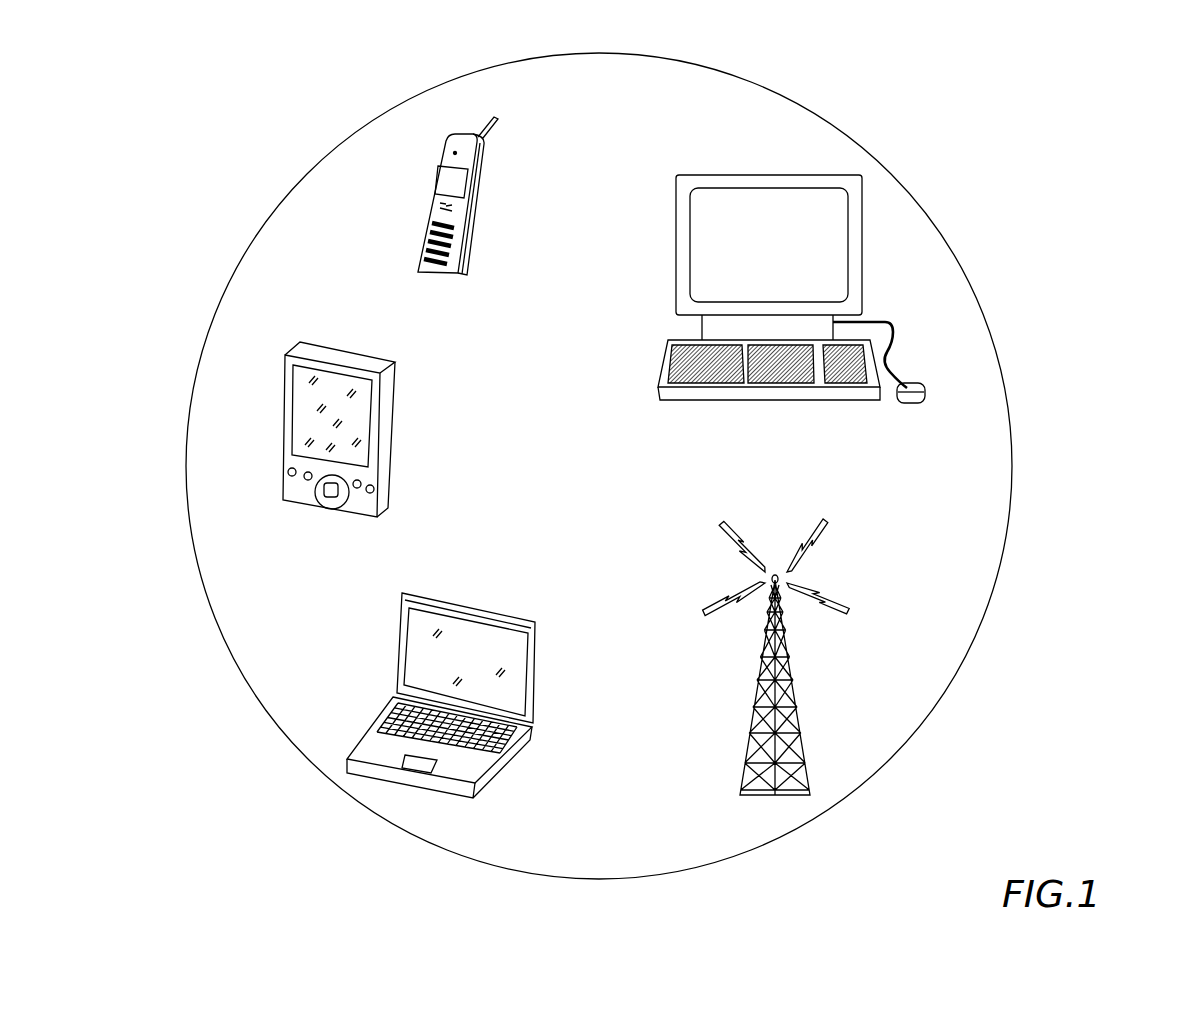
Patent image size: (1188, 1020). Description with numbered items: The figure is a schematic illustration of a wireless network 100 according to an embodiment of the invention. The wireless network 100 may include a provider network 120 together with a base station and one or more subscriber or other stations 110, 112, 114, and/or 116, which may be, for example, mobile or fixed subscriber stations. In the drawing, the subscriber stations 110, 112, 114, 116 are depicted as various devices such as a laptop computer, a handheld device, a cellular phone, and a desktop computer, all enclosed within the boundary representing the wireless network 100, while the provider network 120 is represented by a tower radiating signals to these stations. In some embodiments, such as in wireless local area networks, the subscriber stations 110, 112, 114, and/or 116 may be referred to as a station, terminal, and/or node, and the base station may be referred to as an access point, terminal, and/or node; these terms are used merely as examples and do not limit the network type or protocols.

The wireless network 100 is at (1075, 100).
The subscriber station 110 is at (473, 603).
The subscriber station 112 is at (398, 453).
The subscriber station 114 is at (432, 183).
The subscriber station 116 is at (743, 172).
The provider network 120 is at (802, 720).